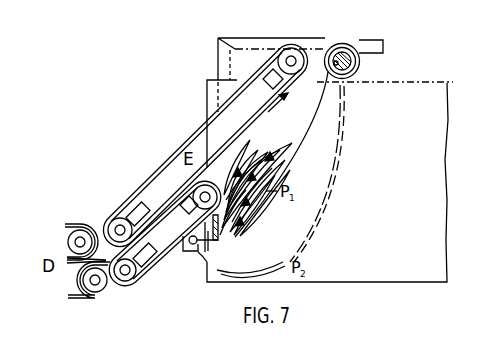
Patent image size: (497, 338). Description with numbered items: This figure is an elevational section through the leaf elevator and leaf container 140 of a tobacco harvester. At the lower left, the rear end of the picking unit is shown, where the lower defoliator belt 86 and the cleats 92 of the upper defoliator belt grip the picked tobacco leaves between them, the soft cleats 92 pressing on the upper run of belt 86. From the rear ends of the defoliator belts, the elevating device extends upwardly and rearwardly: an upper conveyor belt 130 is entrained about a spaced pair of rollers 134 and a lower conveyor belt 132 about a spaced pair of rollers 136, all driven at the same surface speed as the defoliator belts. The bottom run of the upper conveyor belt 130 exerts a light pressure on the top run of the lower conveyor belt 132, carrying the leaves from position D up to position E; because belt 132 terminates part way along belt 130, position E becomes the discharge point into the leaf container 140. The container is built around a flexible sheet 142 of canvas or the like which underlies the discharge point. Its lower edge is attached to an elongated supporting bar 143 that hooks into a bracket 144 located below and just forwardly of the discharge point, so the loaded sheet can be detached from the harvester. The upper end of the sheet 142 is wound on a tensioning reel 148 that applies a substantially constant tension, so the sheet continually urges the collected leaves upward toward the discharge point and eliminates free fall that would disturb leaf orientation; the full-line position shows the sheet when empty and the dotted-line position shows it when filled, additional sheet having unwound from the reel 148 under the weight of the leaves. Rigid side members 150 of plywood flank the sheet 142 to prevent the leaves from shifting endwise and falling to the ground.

The lower defoliator belt 86 is at (74, 294).
The cleats 92 is at (106, 223).
The upper conveyor belt 130 is at (191, 140).
The lower conveyor belt 132 is at (158, 273).
The rollers 134 is at (121, 206).
The rollers 136 is at (191, 202).
The leaf container 140 is at (352, 173).
The flexible sheet 142 is at (307, 118).
The elongated supporting bar 143 is at (191, 240).
The bracket 144 is at (206, 272).
The tensioning reel 148 is at (366, 50).
The rigid side members 150 is at (392, 71).